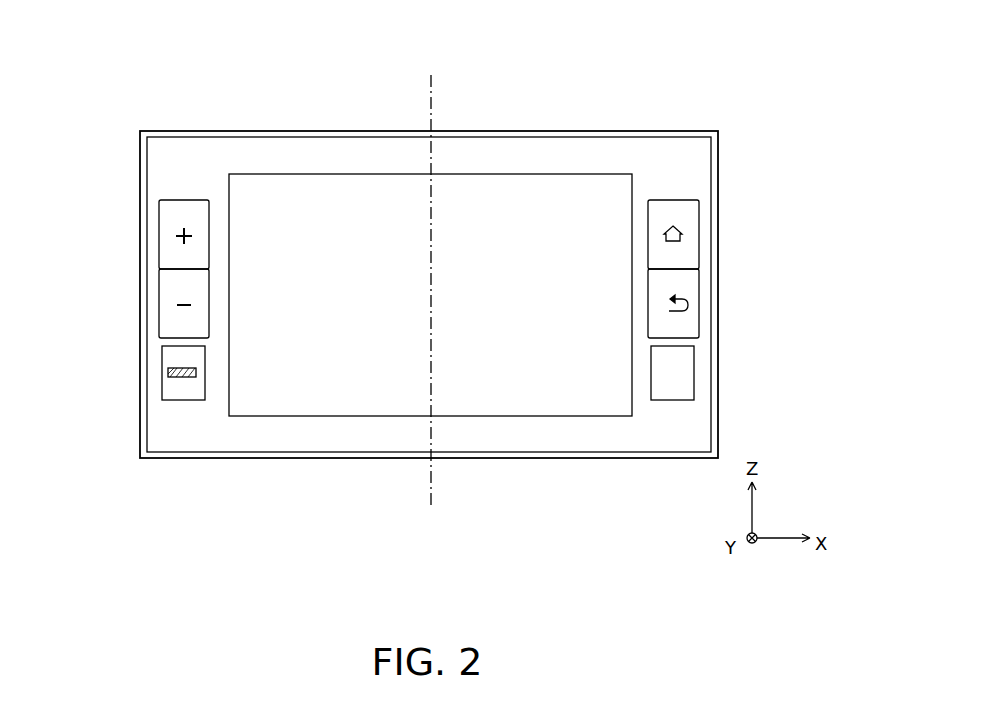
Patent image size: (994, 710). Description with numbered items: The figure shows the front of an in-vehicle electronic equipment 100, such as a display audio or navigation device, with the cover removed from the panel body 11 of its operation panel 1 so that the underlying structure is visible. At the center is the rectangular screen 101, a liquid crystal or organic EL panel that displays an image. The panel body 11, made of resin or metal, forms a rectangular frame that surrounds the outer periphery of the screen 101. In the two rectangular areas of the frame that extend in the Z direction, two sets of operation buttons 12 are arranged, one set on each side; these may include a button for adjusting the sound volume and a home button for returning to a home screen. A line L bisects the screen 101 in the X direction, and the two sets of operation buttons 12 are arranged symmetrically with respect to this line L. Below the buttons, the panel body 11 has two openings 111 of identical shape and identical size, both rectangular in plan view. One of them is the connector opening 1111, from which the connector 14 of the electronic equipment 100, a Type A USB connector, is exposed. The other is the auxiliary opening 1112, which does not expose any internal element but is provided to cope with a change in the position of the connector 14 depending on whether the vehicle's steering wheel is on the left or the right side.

The electronic equipment 100 is at (690, 113).
The operation panel 1 is at (692, 150).
The panel body 11 is at (688, 178).
The screen 101 is at (286, 195).
The line L is at (432, 103).
The operation button 12 is at (170, 302).
The openings 111 is at (419, 428).
The connector opening 1111 is at (178, 393).
The auxiliary opening 1112 is at (657, 393).
The connector 14 is at (168, 375).